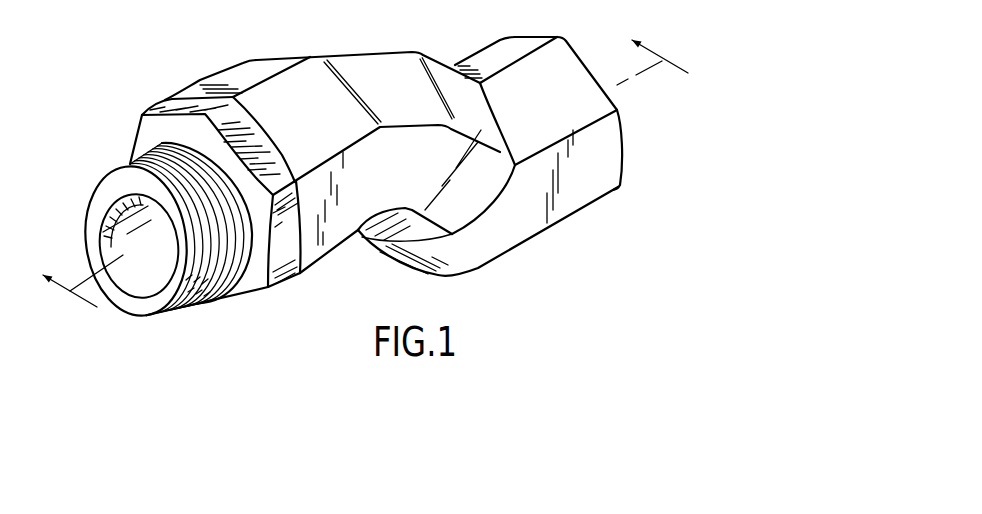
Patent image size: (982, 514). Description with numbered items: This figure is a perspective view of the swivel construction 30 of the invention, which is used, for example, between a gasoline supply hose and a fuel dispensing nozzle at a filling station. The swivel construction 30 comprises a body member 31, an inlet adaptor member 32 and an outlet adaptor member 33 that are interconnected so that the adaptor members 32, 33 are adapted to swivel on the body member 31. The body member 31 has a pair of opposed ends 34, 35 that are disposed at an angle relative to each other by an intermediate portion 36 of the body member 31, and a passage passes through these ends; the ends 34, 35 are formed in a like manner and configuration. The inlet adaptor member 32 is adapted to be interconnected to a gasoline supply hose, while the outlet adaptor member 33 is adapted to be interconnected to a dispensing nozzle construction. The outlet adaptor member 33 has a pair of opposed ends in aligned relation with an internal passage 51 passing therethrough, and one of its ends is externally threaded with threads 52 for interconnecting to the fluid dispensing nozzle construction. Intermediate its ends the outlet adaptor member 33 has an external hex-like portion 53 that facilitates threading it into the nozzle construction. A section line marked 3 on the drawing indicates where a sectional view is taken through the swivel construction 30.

The swivel construction 30 is at (243, 55).
The body member 31 is at (342, 56).
The inlet adaptor member 32 is at (580, 187).
The outlet adaptor member 33 is at (152, 135).
The end of body member 34 is at (236, 99).
The end of body member 35 is at (468, 110).
The intermediate portion 36 is at (387, 77).
The internal passage 51 is at (150, 273).
The threads 52 is at (133, 162).
The external hex-like portion 53 is at (280, 258).
The section line 3- 3 is at (367, 175).